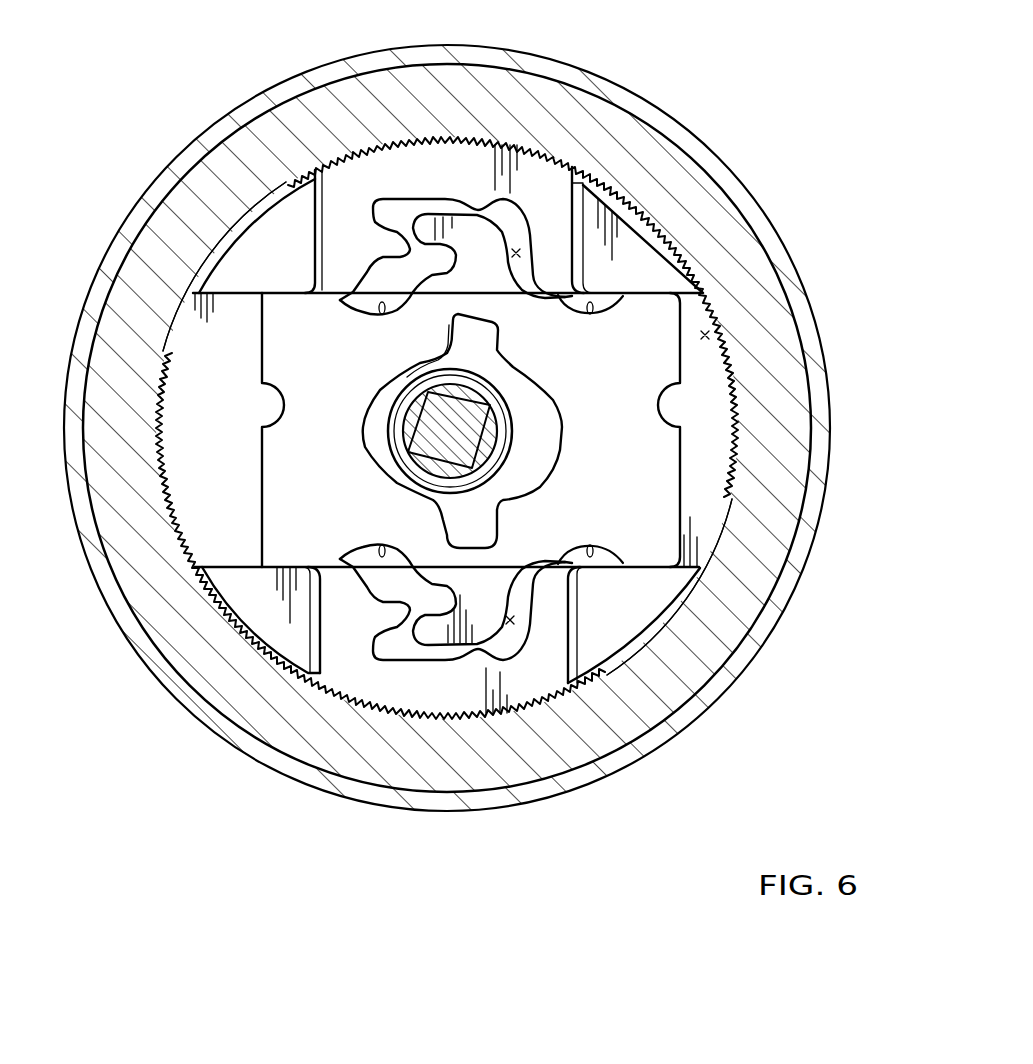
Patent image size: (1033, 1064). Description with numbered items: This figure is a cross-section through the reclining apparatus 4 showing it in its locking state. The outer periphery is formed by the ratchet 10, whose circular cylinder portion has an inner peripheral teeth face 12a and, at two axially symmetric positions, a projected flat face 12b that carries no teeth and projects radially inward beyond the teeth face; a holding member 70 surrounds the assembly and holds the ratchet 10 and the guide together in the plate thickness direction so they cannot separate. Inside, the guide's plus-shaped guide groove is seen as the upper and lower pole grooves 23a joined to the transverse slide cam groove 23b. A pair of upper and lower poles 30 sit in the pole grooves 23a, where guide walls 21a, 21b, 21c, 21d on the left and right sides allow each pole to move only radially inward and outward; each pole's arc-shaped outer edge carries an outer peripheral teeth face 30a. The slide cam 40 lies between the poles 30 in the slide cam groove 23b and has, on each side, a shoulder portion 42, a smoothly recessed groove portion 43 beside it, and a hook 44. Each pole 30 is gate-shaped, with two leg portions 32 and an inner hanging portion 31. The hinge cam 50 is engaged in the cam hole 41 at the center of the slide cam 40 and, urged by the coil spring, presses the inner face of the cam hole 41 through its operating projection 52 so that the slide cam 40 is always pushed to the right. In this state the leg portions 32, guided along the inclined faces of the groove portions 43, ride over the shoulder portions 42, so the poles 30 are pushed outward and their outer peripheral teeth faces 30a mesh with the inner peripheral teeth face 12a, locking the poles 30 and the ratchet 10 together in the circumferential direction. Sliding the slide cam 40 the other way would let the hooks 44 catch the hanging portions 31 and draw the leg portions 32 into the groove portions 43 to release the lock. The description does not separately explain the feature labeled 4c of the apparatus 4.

The reclining apparatus 4 is at (232, 76).
The shaft bore 4c is at (441, 435).
The holding member 70 is at (197, 150).
The poles 30 is at (396, 166).
The outer peripheral teeth faces 30a is at (461, 720).
The inner peripheral teeth face 12a is at (468, 140).
The ratchet 10 is at (556, 133).
The projected flat face 12b is at (258, 214).
The guide wall 21a is at (240, 279).
The guide wall 21b is at (624, 262).
The guide wall 21c is at (267, 592).
The guide wall 21d is at (652, 577).
The pole grooves 23a is at (517, 250).
The slide cam groove 23b is at (706, 334).
The hanging portions 31 is at (397, 245).
The leg portions 32 is at (340, 276).
The slide cam 40 is at (286, 442).
The cam hole 41 is at (529, 426).
The shoulder portions 42 is at (342, 306).
The groove portions 43 is at (383, 314).
The hooks 44 is at (432, 228).
The hinge cam 50 is at (403, 406).
The operating projection 52 is at (473, 337).